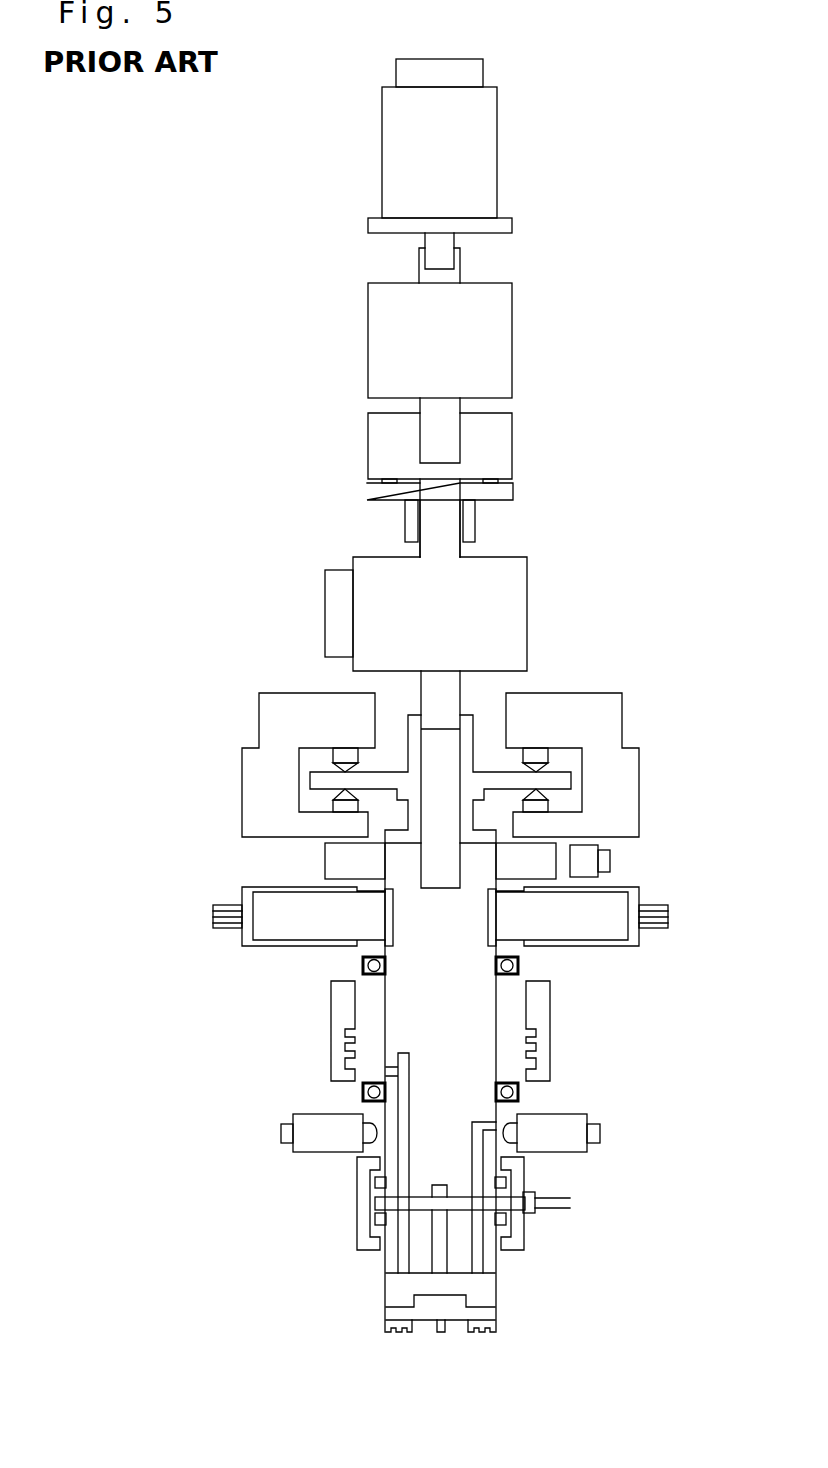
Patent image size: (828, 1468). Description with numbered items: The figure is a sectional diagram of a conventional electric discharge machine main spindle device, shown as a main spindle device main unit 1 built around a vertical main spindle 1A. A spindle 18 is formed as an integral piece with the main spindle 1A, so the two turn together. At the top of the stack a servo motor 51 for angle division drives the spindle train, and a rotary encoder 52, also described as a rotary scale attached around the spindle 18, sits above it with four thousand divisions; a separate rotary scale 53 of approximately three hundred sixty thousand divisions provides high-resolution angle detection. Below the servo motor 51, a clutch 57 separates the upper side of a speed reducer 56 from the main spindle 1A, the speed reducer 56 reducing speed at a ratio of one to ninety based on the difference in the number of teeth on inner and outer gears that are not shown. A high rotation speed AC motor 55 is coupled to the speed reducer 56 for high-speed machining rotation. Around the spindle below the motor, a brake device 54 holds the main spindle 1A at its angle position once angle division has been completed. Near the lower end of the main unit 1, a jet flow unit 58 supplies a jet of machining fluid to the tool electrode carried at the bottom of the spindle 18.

The main spindle device main unit 1 is at (598, 398).
The main spindle 1A is at (453, 551).
The spindle 18 is at (497, 1030).
The servo motor 51 is at (497, 172).
The rotary encoder 52 is at (475, 72).
The rotary scale 53 is at (610, 861).
The brake device 54 is at (598, 693).
The high rotation speed AC motor 55 is at (523, 642).
The speed reducer 56 is at (512, 342).
The clutch 57 is at (507, 457).
The jet flow unit 58 is at (512, 1247).